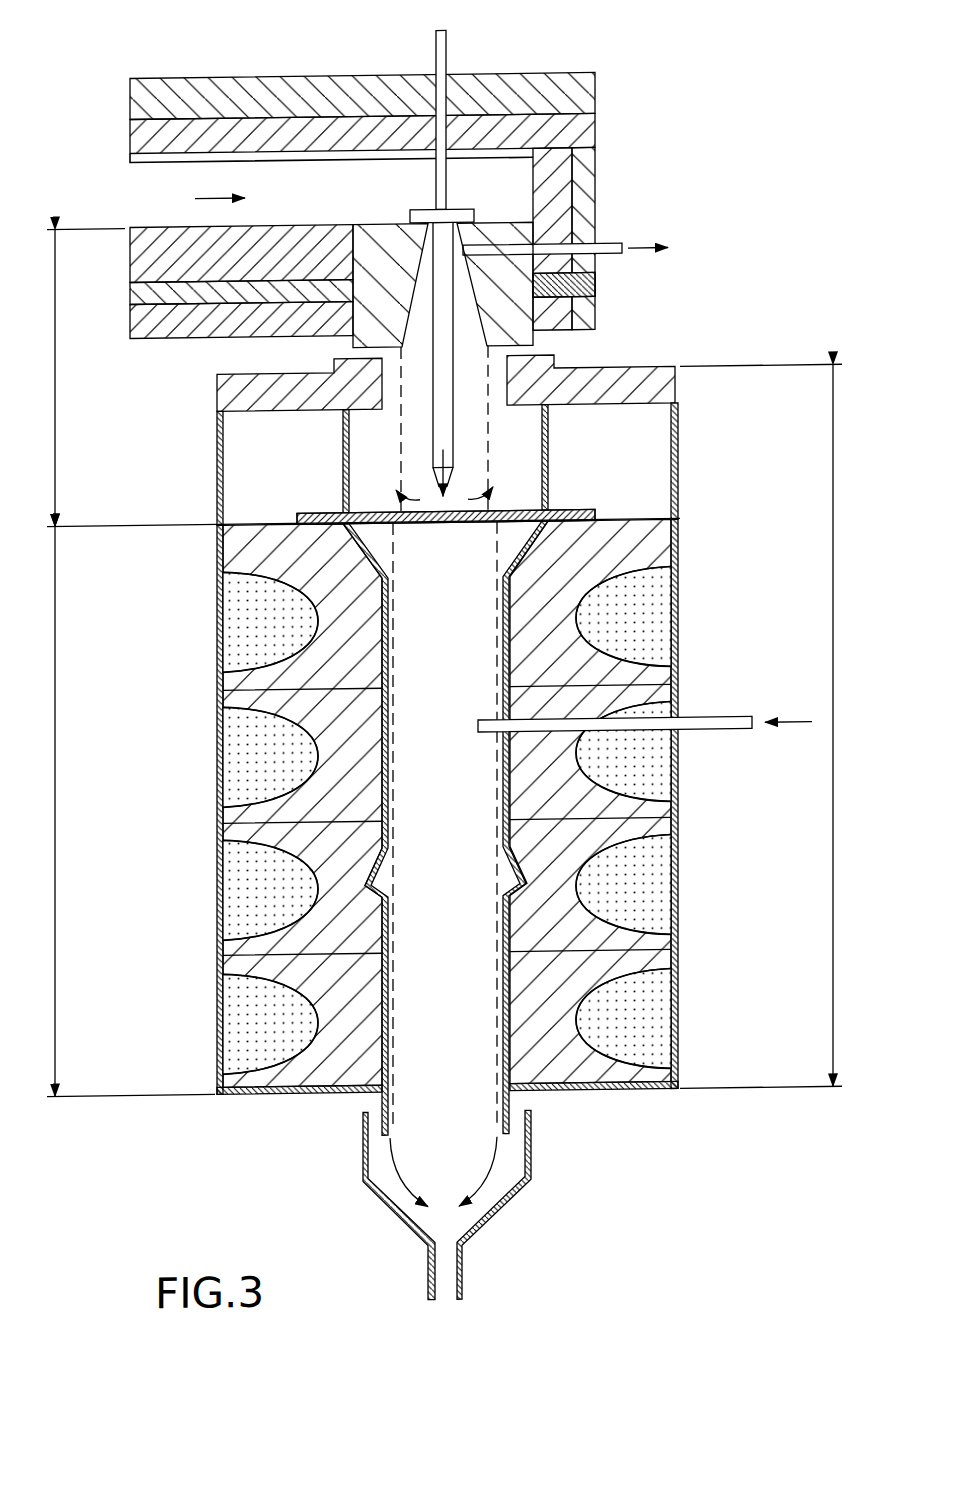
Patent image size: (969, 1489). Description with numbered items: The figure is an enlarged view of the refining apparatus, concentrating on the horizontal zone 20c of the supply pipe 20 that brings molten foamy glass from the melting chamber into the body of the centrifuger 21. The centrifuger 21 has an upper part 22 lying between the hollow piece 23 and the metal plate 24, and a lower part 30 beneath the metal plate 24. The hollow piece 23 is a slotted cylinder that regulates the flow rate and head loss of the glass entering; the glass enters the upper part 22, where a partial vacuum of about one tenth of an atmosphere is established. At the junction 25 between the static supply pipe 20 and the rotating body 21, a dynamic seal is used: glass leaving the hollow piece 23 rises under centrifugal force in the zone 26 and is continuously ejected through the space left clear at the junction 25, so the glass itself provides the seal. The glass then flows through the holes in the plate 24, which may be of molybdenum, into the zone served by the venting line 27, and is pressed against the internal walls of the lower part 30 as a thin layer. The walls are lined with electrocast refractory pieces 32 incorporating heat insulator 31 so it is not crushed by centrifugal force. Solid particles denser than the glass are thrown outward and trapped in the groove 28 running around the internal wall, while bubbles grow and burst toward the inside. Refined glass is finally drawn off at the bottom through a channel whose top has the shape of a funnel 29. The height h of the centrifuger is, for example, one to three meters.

The supply pipe 20 is at (140, 204).
The horizontal third part of the supply pipe 20c is at (190, 90).
The centrifuger 21 is at (717, 544).
The upper part of the centrifuger 22 is at (50, 436).
The hollow piece 23 is at (430, 210).
The metal plate 24 is at (455, 528).
The junction 25 is at (540, 360).
The zone 26 is at (390, 480).
The venting line 27 is at (720, 721).
The notch or groove 28 is at (507, 870).
The funnel 29 is at (508, 1196).
The lower part of the centrifuger 30 is at (50, 824).
The heat insulator 31 is at (655, 622).
The electrocast refractory pieces 32 is at (657, 541).
The height of the centrifuger h is at (761, 726).